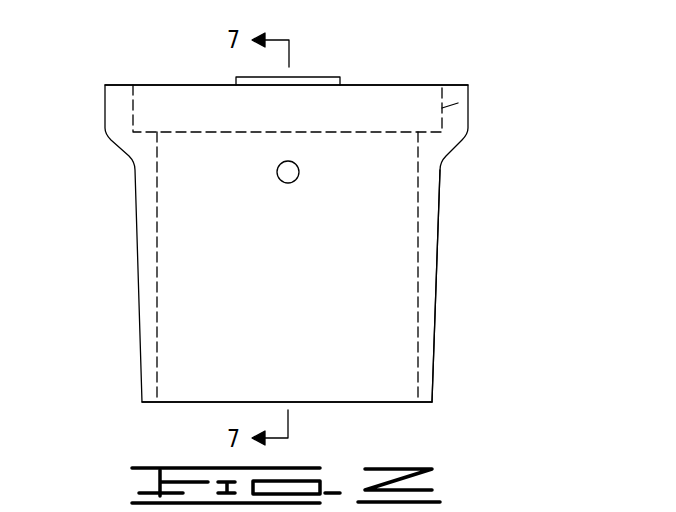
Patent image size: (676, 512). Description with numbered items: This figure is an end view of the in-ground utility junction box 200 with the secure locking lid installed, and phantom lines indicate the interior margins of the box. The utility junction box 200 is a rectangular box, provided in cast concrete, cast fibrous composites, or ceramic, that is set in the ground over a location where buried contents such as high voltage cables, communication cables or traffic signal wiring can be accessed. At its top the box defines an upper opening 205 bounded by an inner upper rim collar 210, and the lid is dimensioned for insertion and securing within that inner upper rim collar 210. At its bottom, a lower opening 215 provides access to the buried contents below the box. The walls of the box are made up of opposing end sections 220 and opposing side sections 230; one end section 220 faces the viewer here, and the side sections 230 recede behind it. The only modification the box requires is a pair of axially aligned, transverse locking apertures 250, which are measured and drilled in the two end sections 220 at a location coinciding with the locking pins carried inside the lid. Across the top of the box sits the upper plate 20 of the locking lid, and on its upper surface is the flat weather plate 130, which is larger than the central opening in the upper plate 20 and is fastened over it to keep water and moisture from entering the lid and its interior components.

The upper plate 20 is at (155, 103).
The weather plate 130 is at (330, 76).
The utility junction box 200 is at (455, 145).
The upper opening 205 is at (443, 84).
The inner upper rim collar 210 is at (468, 98).
The lower opening 215 is at (390, 402).
The end section 220 is at (187, 282).
The side section 230 is at (433, 338).
The locking aperture 250 is at (277, 176).